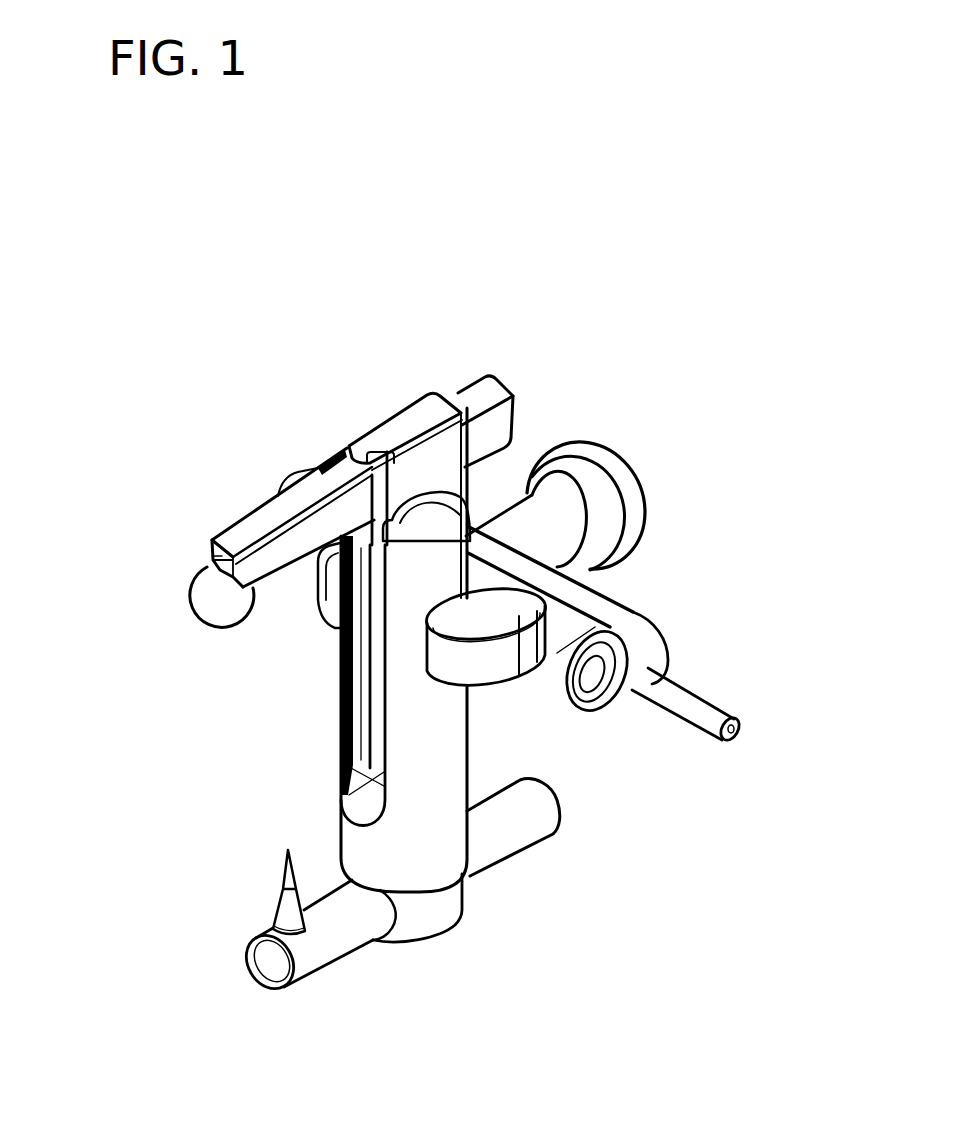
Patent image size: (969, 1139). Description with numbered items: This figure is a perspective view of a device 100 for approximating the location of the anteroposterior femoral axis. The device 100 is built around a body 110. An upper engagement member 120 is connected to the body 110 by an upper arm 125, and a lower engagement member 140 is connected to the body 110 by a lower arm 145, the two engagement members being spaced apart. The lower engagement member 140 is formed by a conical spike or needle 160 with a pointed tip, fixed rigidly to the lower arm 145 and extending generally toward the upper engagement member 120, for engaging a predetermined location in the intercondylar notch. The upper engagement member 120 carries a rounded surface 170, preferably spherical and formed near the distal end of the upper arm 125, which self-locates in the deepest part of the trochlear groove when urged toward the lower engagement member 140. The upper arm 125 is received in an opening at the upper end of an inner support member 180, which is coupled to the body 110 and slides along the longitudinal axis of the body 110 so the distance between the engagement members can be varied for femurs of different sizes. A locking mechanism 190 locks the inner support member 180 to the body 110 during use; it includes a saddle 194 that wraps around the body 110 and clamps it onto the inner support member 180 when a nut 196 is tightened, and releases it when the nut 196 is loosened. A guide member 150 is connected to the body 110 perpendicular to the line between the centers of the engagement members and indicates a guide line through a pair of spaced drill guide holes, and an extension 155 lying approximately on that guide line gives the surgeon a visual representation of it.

The device 100 is at (548, 355).
The body 110 is at (430, 867).
The upper engagement member 120 is at (190, 583).
The upper arm 125 is at (255, 524).
The lower engagement member 140 is at (285, 925).
The lower arm 145 is at (335, 942).
The guide member 150 is at (567, 593).
The extension 155 is at (683, 698).
The spike or needle 160 is at (283, 895).
The rounded surface 170 is at (217, 603).
The inner support member 180 is at (410, 412).
The locking mechanism 190 is at (673, 488).
The saddle 194 is at (320, 603).
The nut 196 is at (627, 527).